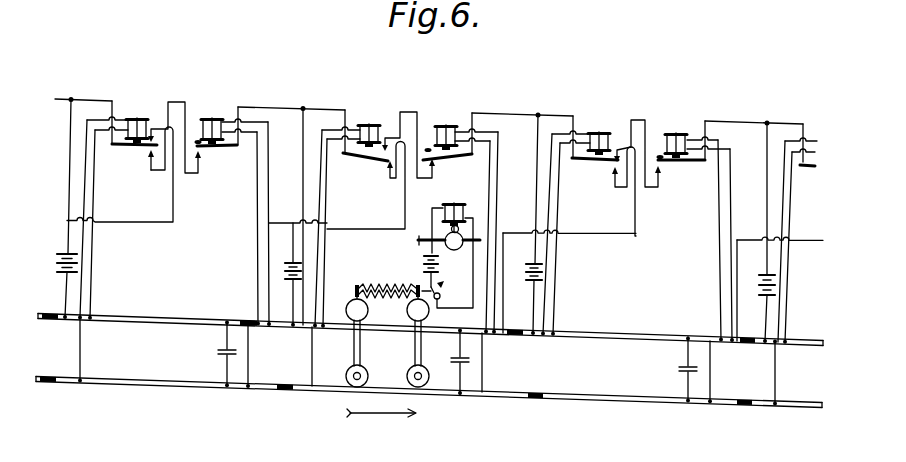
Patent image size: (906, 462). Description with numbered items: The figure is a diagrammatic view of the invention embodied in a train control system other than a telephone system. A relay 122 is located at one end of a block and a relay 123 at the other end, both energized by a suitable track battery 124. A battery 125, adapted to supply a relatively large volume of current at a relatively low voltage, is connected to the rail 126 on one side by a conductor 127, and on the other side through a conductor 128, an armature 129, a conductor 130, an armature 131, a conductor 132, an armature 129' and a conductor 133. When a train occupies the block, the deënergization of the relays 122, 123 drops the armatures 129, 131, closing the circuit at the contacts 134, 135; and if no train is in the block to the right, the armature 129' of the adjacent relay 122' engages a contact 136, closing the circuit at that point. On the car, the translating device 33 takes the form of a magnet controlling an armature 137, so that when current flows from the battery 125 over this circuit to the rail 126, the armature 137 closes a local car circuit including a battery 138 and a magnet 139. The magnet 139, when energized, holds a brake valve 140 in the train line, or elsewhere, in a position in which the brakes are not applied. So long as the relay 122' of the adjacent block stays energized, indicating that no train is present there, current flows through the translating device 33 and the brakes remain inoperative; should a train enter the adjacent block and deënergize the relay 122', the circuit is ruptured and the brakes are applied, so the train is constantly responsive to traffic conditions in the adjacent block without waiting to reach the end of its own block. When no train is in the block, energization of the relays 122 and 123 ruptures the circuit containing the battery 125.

The translating device 33 is at (387, 279).
The relay 122 is at (246, 110).
The relay of the adjacent block 122' is at (591, 122).
The relay 123 is at (213, 118).
The track battery 124 is at (220, 359).
The battery 125 is at (293, 262).
The rail 126 is at (337, 329).
The conductor 127 is at (296, 297).
The conductor 128 is at (302, 193).
The armature 129 is at (360, 167).
The armature 129' is at (593, 173).
The conductor 130 is at (408, 112).
The armature 131 is at (440, 158).
The conductor 132 is at (507, 113).
The conductor 133 is at (600, 236).
The contact 134 is at (387, 168).
The contact 135 is at (434, 172).
The contact 136 is at (628, 142).
The armature 137 is at (446, 292).
The battery 138 is at (424, 257).
The magnet 139 is at (456, 203).
The brake valve 140 is at (462, 233).